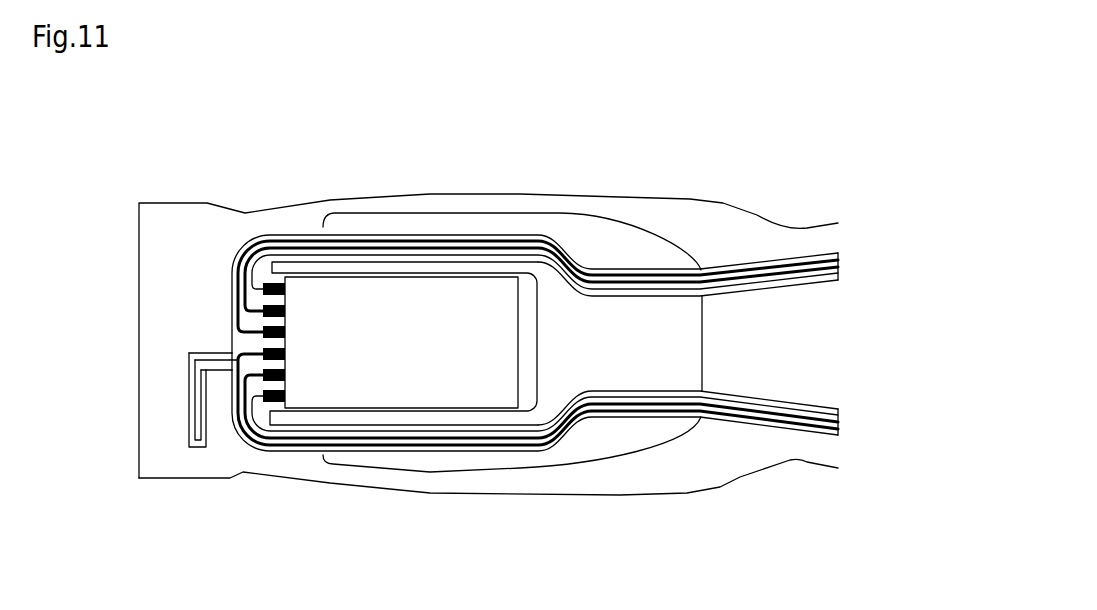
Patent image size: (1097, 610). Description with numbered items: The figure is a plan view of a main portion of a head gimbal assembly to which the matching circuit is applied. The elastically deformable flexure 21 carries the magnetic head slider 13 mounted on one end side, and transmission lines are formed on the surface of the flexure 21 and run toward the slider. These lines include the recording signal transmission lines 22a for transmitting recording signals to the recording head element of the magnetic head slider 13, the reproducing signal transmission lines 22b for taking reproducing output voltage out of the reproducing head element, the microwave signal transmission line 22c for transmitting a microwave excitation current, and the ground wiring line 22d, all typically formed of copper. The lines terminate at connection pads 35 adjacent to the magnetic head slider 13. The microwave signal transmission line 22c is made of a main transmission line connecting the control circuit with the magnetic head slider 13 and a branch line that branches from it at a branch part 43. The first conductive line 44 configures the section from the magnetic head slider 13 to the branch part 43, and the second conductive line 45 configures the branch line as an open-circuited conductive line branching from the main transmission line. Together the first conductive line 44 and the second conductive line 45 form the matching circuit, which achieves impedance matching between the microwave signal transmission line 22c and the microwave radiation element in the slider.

The flexure 21 is at (197, 238).
The magnetic head slider 13 is at (415, 348).
The recording signal transmission lines 22a is at (383, 240).
The reproducing signal transmission lines 22b is at (350, 438).
The microwave signal transmission line 22c is at (325, 430).
The ground wiring line 22d is at (348, 236).
The terminal pads 35 is at (262, 347).
The branch part 43 is at (233, 367).
The first conductive line 44 is at (245, 352).
The second conductive line 45 is at (195, 386).